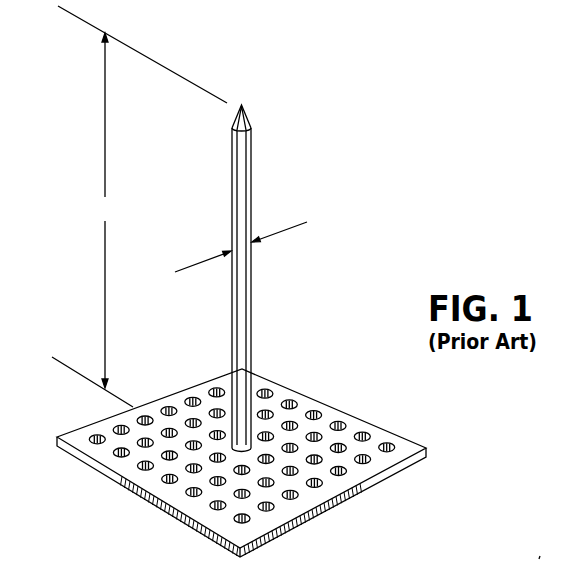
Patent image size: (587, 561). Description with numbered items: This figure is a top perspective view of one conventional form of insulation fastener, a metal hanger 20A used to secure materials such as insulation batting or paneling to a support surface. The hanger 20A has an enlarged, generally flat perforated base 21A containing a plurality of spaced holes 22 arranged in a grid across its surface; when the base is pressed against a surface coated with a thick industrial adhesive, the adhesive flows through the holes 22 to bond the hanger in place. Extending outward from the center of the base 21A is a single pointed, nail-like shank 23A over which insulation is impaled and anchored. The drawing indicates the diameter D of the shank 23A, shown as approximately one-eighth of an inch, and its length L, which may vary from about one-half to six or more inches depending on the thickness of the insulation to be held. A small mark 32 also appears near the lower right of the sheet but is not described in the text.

The hanger 20A is at (234, 333).
The perforated base 21A is at (241, 450).
The spaced holes 22 is at (313, 411).
The shank 23A is at (251, 150).
The length of the shank L is at (139, 206).
The diameter of the shank D is at (285, 232).
The sheet mark 32 is at (540, 548).